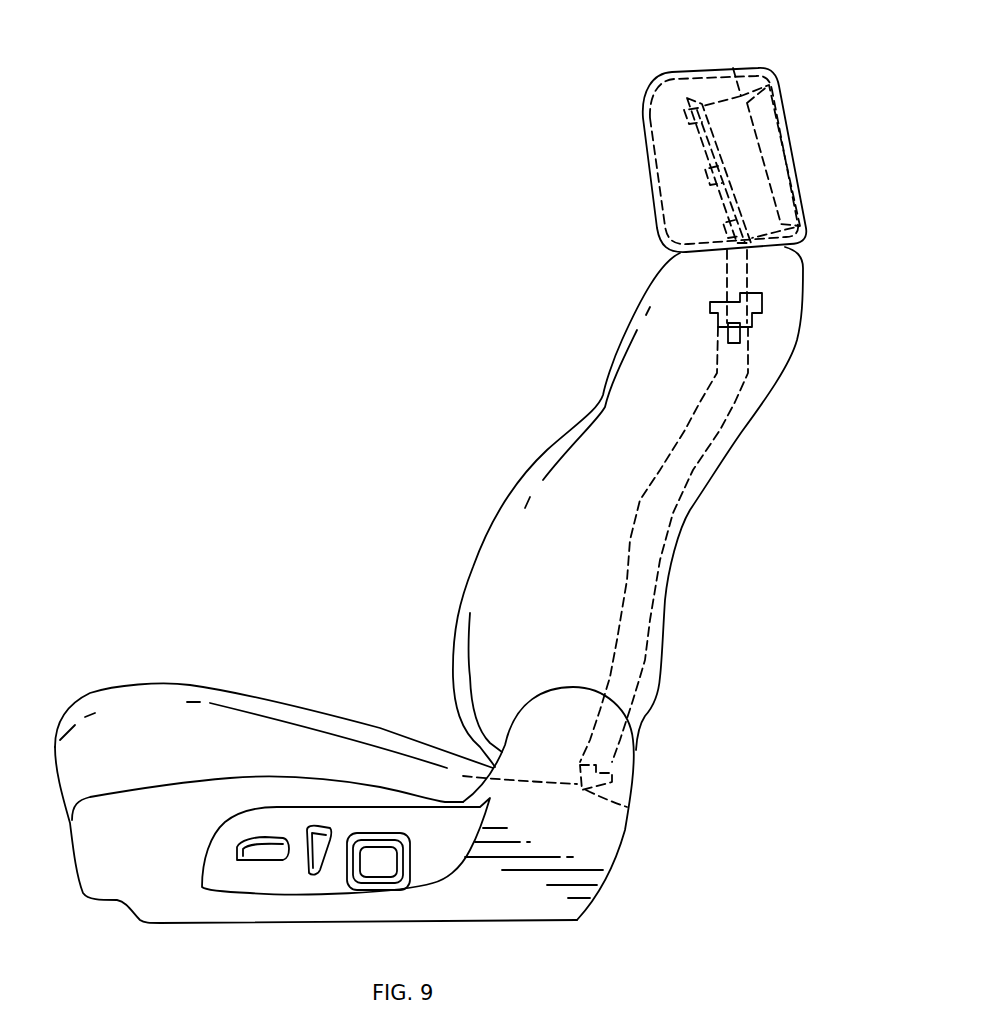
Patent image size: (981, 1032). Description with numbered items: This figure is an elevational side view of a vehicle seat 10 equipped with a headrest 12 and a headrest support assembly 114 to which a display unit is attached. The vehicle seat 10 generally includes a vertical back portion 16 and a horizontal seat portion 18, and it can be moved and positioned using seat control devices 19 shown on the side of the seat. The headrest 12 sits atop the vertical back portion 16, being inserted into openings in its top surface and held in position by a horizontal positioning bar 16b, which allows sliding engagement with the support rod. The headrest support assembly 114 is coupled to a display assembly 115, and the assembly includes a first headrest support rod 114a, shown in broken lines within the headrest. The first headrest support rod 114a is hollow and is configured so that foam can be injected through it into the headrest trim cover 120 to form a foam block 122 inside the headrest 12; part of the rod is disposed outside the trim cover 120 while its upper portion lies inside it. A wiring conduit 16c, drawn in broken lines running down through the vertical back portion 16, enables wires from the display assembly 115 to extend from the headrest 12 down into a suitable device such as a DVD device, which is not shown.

The vehicle seat 10 is at (360, 458).
The headrest 12 is at (645, 87).
The vertical back portion 16 is at (547, 452).
The horizontal positioning bar 16b is at (747, 283).
The wiring conduit 16c is at (680, 504).
The horizontal seat portion 18 is at (263, 693).
The seat control devices 19 is at (290, 873).
The headrest support assembly 114 is at (690, 151).
The first headrest support rod 114a is at (717, 193).
The display assembly 115 is at (728, 66).
The headrest trim cover 120 is at (661, 76).
The foam block 122 is at (667, 128).